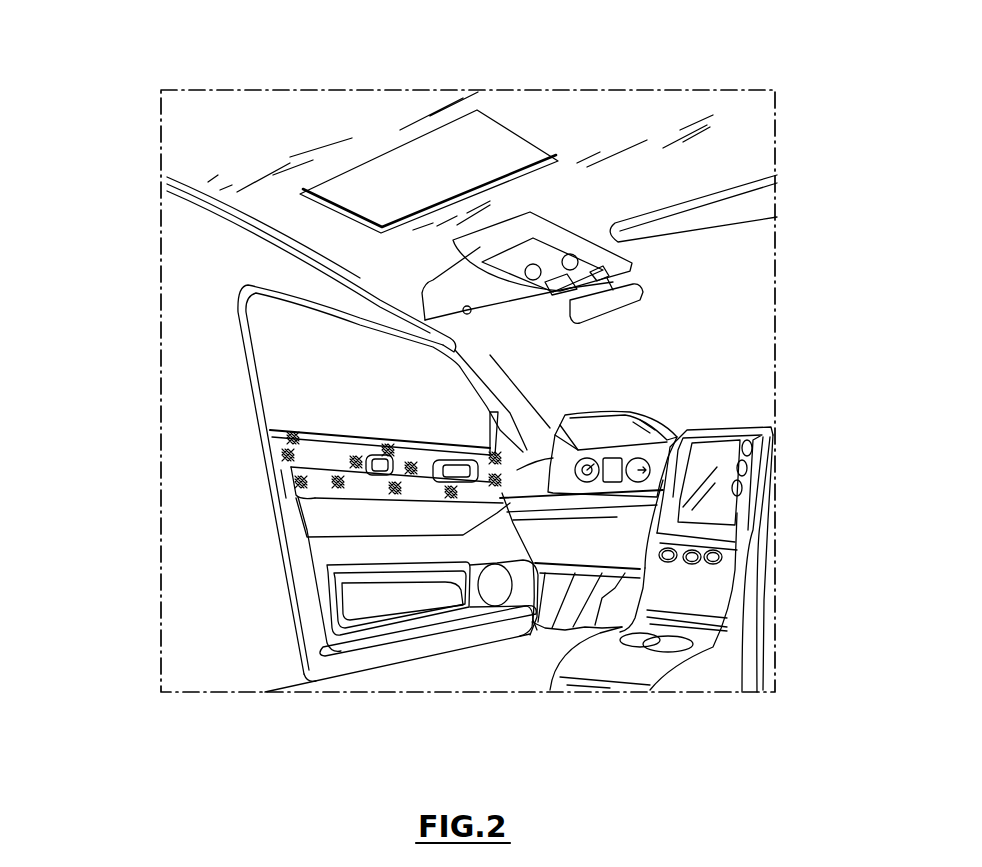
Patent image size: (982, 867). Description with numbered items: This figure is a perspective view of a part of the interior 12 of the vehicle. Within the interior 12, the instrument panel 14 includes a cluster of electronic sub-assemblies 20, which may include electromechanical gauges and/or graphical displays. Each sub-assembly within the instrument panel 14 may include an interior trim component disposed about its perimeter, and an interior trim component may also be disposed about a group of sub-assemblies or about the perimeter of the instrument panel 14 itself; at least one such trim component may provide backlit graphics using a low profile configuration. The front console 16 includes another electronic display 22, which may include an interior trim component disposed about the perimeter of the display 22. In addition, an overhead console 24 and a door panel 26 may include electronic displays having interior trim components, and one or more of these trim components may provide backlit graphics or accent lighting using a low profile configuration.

The interior 12 is at (262, 128).
The instrument panel 14 is at (600, 457).
The front console 16 is at (710, 437).
The electronic sub-assemblies 20 is at (590, 495).
The electronic display 22 is at (777, 435).
The overhead console 24 is at (550, 237).
The door panel 26 is at (268, 477).